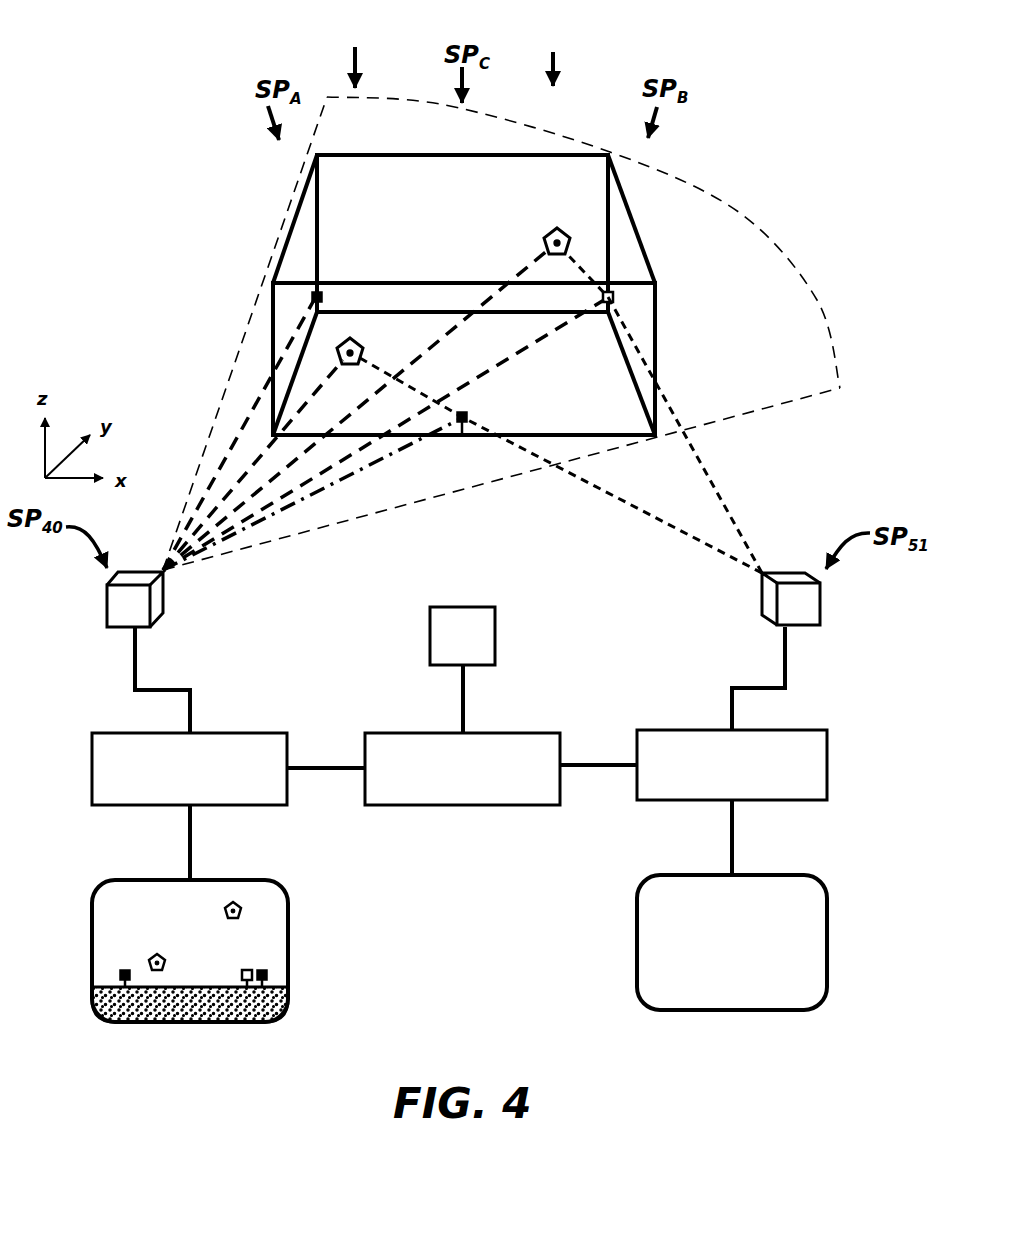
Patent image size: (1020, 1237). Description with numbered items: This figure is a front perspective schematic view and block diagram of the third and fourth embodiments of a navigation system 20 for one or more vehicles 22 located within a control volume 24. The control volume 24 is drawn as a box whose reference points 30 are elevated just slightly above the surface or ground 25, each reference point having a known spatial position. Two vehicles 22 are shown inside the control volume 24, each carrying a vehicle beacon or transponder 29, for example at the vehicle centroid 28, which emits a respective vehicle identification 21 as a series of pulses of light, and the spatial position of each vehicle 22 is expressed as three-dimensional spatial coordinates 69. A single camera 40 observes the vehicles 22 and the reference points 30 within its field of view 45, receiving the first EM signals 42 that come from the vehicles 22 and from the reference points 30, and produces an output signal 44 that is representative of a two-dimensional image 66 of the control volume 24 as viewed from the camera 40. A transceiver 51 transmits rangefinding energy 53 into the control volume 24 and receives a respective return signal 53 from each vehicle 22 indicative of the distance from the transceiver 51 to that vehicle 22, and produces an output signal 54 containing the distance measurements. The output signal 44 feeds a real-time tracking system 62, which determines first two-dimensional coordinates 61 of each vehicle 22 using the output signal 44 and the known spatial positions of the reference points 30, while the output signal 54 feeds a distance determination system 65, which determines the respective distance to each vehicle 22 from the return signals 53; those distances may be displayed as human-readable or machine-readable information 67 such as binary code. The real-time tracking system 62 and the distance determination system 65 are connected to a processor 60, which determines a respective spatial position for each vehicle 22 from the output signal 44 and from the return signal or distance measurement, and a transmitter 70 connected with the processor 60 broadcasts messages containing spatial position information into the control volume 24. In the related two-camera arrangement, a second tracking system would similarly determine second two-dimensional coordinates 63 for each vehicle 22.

The navigation system 20 is at (120, 82).
The vehicle identification 21 is at (239, 483).
The vehicles 22 is at (550, 237).
The control volume 24 is at (367, 197).
The surface or ground 25 is at (595, 400).
The vehicle centroid 28 is at (558, 229).
The vehicle beacon or transponder 29 is at (558, 229).
The reference points 30 is at (312, 297).
The camera 40 is at (107, 603).
The first EM signals 42 is at (200, 513).
The output signal 44 is at (133, 657).
The field of view 45 is at (728, 232).
The transceiver 51 is at (820, 603).
The transmitted and received EM/rangefinding energy 53 is at (690, 448).
The output signal 54 is at (787, 655).
The processor 60 is at (478, 783).
The first two-dimensional coordinates 61 is at (325, 767).
The real-time tracking system 62 is at (205, 783).
The second two-dimensional coordinates 63 is at (593, 764).
The distance determination system 65 is at (747, 780).
The two-dimensional image 66 is at (288, 957).
The distance measurement information 67 is at (637, 947).
The three-dimensional spatial coordinates 69 is at (457, 54).
The transmitter 70 is at (478, 650).